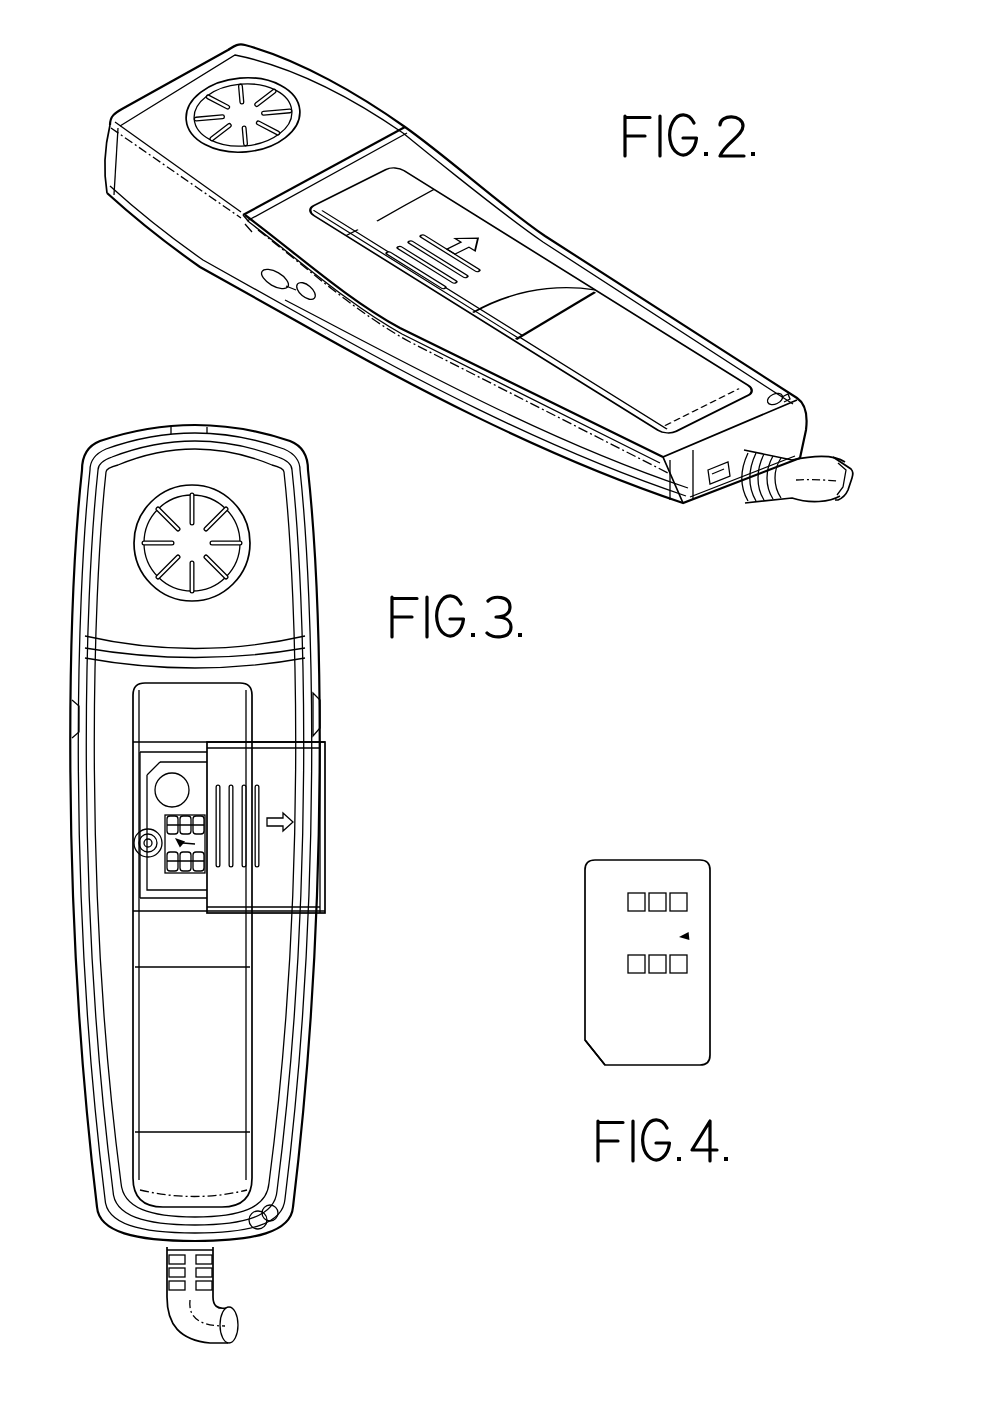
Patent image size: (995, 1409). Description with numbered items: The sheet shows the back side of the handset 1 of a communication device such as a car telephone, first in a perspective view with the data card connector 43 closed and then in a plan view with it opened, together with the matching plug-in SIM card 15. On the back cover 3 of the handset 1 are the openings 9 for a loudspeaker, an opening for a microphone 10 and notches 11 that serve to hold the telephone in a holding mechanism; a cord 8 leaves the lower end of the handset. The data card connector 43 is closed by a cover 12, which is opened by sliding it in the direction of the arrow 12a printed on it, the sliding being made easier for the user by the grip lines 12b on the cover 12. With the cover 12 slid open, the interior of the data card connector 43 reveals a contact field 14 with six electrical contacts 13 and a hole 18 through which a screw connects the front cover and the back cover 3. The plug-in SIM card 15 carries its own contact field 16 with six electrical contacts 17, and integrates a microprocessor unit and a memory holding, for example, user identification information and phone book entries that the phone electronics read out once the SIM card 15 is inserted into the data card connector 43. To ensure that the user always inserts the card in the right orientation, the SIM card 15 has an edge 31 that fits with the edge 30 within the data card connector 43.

In FIG. 2, the handset 1 is at (137, 79).
In FIG. 3, the handset 1 is at (93, 428).
In FIG. 2, the back cover 3 is at (250, 58).
In FIG. 3, the back cover 3 is at (118, 503).
In FIG. 2, the cord 8 is at (804, 494).
In FIG. 3, the cord 8 is at (167, 1303).
In FIG. 2, the openings for a loudspeaker 9 is at (285, 105).
In FIG. 3, the openings for a loudspeaker 9 is at (250, 535).
In FIG. 2, the opening for a microphone 10 is at (781, 394).
In FIG. 3, the opening for a microphone 10 is at (280, 1207).
In FIG. 2, the notches 11 is at (307, 298).
In FIG. 3, the notches 11 is at (320, 705).
In FIG. 2, the cover 12 is at (525, 262).
In FIG. 3, the cover 12 is at (326, 776).
In FIG. 2, the arrow 12a is at (470, 234).
In FIG. 2, the grip lines 12b is at (515, 293).
In FIG. 3, the electrical contacts 13 is at (170, 871).
In FIG. 3, the contact field 14 is at (195, 844).
In FIG. 4, the Plug-In SIM card 15 is at (745, 841).
In FIG. 4, the contact field 16 is at (690, 937).
In FIG. 4, the electrical contacts 17 is at (688, 963).
In FIG. 3, the hole 18 is at (136, 841).
In FIG. 3, the edge 30 is at (145, 770).
In FIG. 4, the edge 31 is at (598, 1061).
In FIG. 2, the data card connector 43 is at (467, 155).
In FIG. 3, the data card connector 43 is at (59, 699).